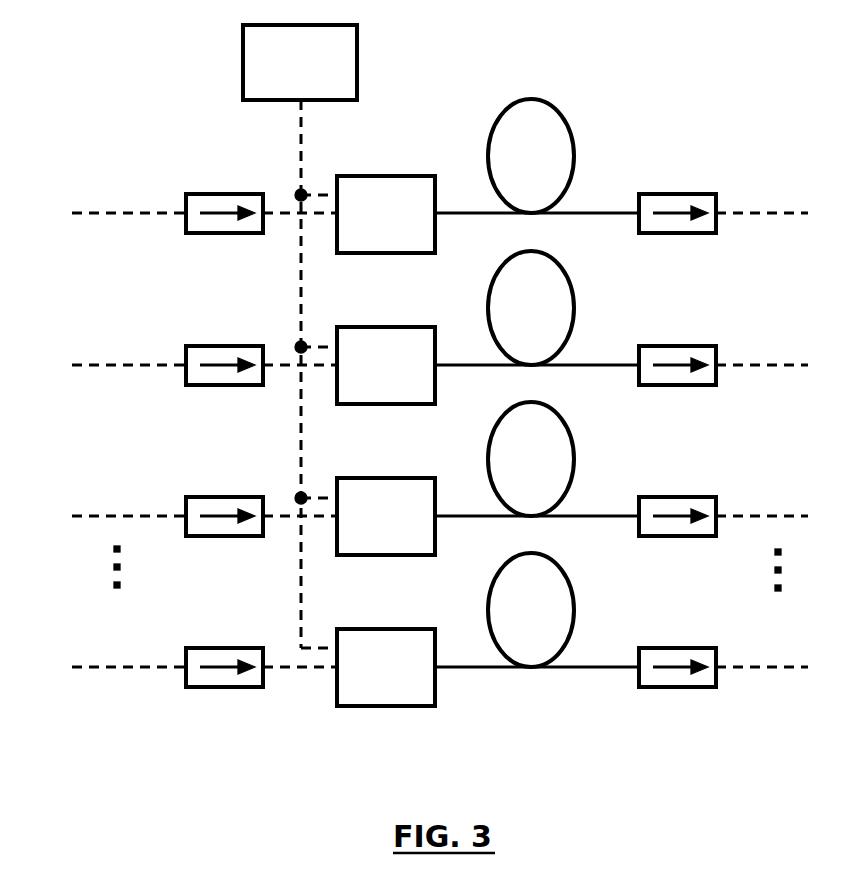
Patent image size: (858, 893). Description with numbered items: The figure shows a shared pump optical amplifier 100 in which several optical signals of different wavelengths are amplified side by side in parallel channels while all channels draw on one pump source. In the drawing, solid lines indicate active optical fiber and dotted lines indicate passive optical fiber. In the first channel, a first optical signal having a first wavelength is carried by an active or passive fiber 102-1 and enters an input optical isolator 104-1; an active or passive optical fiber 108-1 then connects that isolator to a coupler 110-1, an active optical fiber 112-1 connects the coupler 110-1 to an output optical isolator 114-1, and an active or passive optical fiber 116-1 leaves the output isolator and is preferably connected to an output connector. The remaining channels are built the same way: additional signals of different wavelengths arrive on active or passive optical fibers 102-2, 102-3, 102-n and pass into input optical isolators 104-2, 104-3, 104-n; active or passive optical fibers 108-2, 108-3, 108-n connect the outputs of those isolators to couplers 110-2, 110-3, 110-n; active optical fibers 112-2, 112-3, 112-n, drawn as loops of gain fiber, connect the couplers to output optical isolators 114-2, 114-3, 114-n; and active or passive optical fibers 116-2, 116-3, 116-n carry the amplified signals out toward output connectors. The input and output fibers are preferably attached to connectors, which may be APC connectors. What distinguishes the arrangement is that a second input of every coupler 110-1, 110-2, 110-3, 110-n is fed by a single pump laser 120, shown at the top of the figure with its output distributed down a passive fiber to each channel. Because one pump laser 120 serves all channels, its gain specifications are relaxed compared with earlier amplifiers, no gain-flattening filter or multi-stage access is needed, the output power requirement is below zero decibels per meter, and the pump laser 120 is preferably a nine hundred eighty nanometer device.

The shared pump optical amplifier 100 is at (680, 95).
The active or passive fiber 102-1 is at (140, 212).
The active or passive optical fiber 102-2 is at (140, 364).
The active or passive optical fiber 102-3 is at (140, 515).
The active or passive optical fiber 102-n is at (140, 666).
The input optical isolator 104-1 is at (215, 193).
The input optical isolator 104-2 is at (215, 345).
The input optical isolator 104-3 is at (207, 496).
The input optical isolator 104-n is at (207, 647).
The active or passive optical fiber 108-1 is at (282, 215).
The active or passive optical fiber 108-2 is at (282, 367).
The active or passive optical fiber 108-3 is at (282, 518).
The active or passive optical fiber 108-n is at (290, 669).
The coupler 110-1 is at (377, 253).
The coupler 110-2 is at (377, 405).
The coupler 110-3 is at (377, 556).
The coupler 110-n is at (395, 707).
The active optical fiber 112-1 is at (560, 113).
The active optical fiber 112-2 is at (571, 285).
The active optical fiber 112-3 is at (571, 436).
The active optical fiber 112-n is at (571, 587).
The output optical isolator 114-1 is at (677, 193).
The output optical isolator 114-2 is at (677, 345).
The output optical isolator 114-3 is at (670, 496).
The output optical isolator 114-n is at (672, 647).
The active or passive optical fiber 116-1 is at (742, 217).
The active or passive optical fiber 116-2 is at (742, 369).
The active or passive optical fiber 116-3 is at (757, 518).
The active or passive optical fiber 116-n is at (742, 671).
The pump laser 120 is at (360, 60).